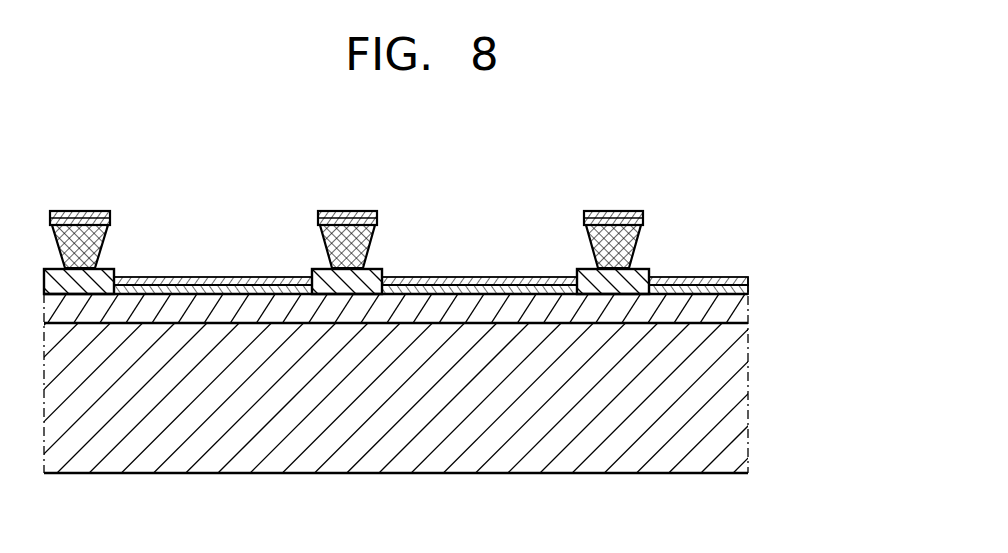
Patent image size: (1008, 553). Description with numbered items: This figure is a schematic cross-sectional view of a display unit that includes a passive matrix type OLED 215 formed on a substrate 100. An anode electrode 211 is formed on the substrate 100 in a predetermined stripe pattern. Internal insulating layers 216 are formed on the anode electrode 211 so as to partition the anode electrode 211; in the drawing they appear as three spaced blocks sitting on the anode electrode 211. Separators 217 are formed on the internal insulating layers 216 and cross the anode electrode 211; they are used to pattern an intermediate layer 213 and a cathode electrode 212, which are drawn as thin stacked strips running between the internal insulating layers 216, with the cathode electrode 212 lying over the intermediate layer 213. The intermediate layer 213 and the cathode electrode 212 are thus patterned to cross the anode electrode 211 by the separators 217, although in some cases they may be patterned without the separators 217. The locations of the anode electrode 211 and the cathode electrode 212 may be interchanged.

The substrate 100 is at (737, 388).
The anode electrode 211 is at (737, 310).
The cathode electrode 212 is at (746, 277).
The intermediate layer 213 is at (748, 290).
The passive matrix type OLED 215 is at (454, 284).
The internal insulating layer 216 is at (592, 282).
The separator 217 is at (637, 245).